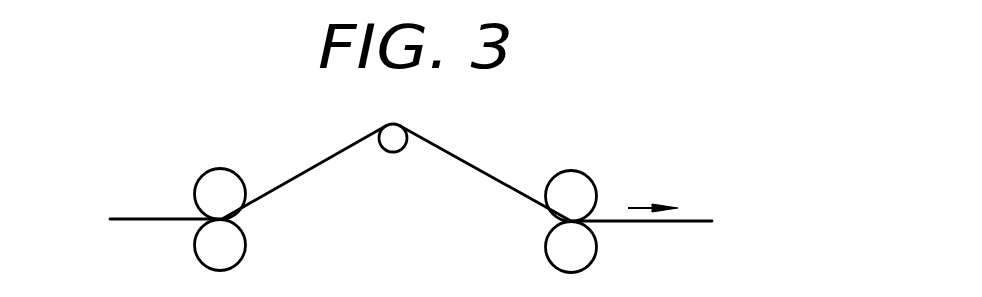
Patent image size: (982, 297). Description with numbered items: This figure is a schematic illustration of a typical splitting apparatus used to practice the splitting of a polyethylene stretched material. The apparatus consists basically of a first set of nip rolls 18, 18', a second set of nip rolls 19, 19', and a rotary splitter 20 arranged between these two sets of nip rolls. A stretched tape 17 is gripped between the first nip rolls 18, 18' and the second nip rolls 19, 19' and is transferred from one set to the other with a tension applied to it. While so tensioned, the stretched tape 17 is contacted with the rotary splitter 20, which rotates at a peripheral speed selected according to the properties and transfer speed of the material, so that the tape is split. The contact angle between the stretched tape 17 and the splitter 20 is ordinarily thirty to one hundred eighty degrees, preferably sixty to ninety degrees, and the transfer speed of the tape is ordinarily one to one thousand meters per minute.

The stretched tape 17 is at (148, 217).
The nip roll 18 is at (223, 168).
The nip roll 18' is at (254, 245).
The nip roll 19 is at (590, 171).
The nip roll 19' is at (524, 247).
The rotary splitter 20 is at (392, 153).